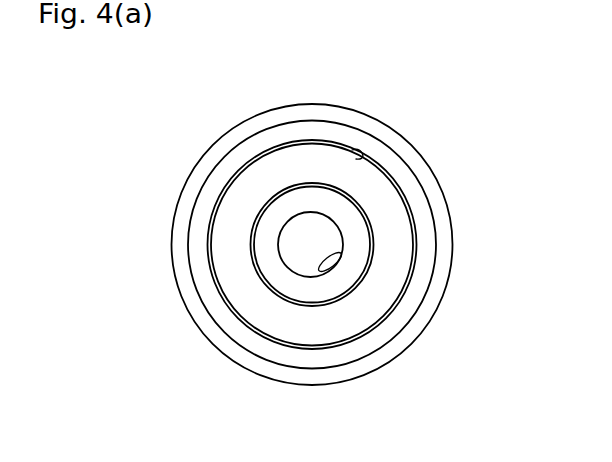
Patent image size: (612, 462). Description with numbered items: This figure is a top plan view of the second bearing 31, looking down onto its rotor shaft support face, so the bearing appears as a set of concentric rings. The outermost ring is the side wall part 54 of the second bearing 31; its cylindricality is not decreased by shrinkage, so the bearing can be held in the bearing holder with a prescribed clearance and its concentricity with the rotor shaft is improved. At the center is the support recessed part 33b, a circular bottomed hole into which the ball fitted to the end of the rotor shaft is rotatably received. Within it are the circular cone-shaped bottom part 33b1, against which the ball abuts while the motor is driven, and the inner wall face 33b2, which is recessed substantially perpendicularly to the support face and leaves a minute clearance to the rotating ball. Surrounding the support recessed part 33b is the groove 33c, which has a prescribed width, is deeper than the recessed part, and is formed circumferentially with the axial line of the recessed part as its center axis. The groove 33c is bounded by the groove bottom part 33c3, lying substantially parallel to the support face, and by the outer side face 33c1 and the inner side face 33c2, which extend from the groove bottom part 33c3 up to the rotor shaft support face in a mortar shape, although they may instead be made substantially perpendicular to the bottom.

The second bearing 31 is at (92, 177).
The side wall part 54 is at (447, 280).
The support recessed part 33b is at (300, 216).
The circular cone-shaped bottom part 33b1 is at (310, 248).
The inner wall face 33b2 is at (325, 260).
The groove 33c is at (351, 191).
The outer side face 33c1 is at (402, 189).
The inner side face 33c2 is at (378, 170).
The groove bottom part 33c3 is at (255, 183).